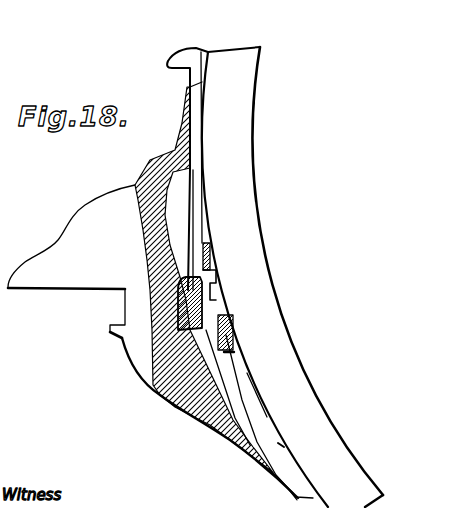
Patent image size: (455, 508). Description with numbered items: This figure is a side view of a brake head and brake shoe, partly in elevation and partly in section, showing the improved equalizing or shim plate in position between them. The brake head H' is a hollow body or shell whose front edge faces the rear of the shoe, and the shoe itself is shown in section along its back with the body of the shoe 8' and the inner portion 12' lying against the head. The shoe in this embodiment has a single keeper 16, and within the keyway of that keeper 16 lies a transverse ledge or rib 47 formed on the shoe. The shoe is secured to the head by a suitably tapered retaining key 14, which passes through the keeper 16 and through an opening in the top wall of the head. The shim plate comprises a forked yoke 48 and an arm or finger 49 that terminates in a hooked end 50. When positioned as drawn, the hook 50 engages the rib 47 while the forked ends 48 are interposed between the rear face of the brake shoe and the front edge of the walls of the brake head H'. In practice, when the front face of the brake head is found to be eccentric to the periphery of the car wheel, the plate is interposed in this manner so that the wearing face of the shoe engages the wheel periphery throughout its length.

The retaining key 14 is at (203, 52).
The outer tube 8' is at (292, 277).
The inner tube 12' is at (261, 248).
The keeper 16 is at (202, 278).
The hooked end 50 is at (210, 285).
The transverse ledge or rib 47 is at (216, 297).
The arm or finger 49 is at (222, 318).
The forked yoke 48 is at (258, 398).
The hull body H' is at (153, 291).